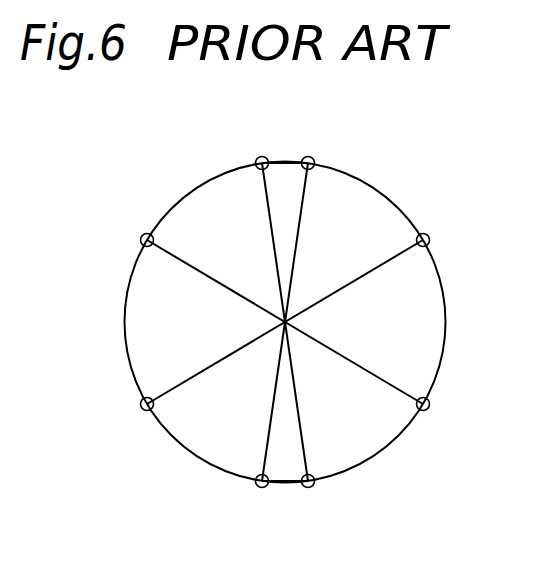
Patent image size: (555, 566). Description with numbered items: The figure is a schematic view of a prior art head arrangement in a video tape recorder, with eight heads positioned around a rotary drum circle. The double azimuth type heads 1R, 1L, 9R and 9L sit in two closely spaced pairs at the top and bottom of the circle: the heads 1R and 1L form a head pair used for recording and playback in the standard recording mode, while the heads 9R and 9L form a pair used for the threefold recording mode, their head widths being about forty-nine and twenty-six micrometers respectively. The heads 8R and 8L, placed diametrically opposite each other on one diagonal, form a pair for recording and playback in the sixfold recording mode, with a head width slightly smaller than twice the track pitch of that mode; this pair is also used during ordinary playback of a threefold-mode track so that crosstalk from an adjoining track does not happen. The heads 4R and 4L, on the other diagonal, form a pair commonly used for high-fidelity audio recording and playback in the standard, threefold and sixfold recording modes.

The head 9R is at (259, 156).
The head 1L is at (311, 156).
The head 8R is at (140, 238).
The head 4L is at (430, 238).
The head 8L is at (430, 406).
The head 4R is at (144, 411).
The head 1R is at (262, 488).
The head 9L is at (308, 488).